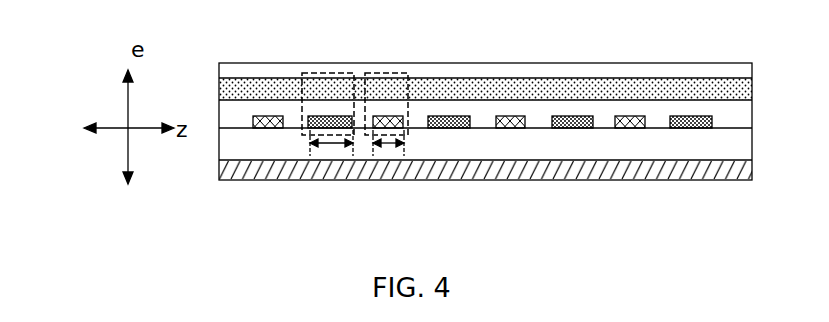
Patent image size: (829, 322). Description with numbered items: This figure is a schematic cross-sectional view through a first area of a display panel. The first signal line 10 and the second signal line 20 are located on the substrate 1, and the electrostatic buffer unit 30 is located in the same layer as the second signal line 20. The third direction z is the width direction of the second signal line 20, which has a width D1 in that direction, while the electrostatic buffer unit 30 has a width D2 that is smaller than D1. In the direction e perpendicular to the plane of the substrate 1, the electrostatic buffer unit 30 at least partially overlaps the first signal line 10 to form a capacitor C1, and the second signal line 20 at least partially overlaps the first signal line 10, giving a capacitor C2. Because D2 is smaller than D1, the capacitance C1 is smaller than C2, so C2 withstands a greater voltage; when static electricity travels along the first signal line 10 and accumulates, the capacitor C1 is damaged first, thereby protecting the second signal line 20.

The substrate 1 is at (517, 162).
The first signal line 10 is at (595, 90).
The second signal line 20 is at (337, 116).
The electrostatic buffer unit 30 is at (389, 116).
The capacitor C1 is at (409, 116).
The capacitor C2 is at (301, 116).
The width of the second signal line D1 is at (317, 144).
The width of the electrostatic buffer unit D2 is at (403, 144).